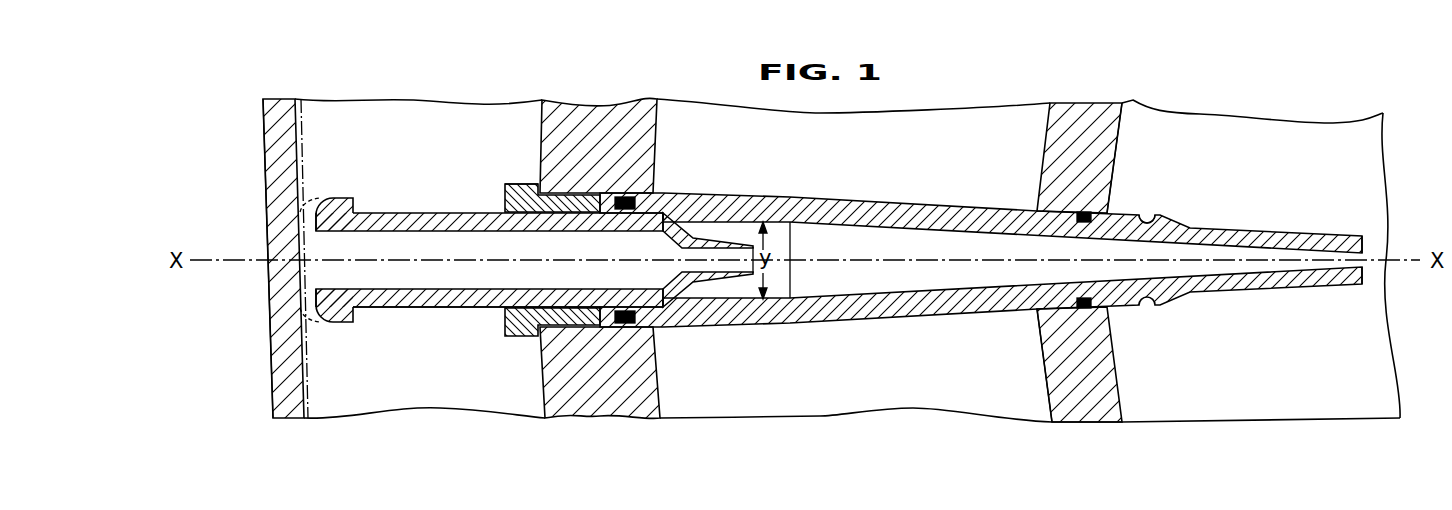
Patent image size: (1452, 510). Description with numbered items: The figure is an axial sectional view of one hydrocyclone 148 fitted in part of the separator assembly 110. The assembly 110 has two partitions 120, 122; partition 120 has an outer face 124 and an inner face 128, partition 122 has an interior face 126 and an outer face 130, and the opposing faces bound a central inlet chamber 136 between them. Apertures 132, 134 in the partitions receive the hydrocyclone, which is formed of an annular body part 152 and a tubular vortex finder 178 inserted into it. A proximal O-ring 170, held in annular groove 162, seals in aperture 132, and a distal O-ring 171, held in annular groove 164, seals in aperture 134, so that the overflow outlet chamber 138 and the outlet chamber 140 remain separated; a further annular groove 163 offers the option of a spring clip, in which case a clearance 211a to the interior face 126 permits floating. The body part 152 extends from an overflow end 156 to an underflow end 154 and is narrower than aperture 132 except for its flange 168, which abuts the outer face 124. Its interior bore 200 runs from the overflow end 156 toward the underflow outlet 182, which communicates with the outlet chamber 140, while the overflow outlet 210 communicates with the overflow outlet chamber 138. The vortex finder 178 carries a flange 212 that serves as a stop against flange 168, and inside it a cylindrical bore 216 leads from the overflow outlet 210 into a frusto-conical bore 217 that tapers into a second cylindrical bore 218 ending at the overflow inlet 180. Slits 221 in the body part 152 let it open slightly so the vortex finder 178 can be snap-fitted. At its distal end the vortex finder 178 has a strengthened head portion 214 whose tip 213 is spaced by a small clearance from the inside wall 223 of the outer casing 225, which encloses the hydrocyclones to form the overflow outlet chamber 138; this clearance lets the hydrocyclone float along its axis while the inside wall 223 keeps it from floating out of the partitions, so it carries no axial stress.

The assembly 110 is at (258, 327).
The partition 120 is at (547, 377).
The partition 122 is at (1110, 407).
The outer face 124 is at (539, 149).
The interior face 126 is at (1115, 153).
The inner face 128 is at (657, 128).
The outer face 130 is at (1042, 146).
The aperture 132 is at (652, 337).
The aperture 134 is at (1107, 338).
The central inlet chamber 136 is at (869, 173).
The overflow outlet chamber 138 is at (415, 137).
The outlet chamber 140 is at (1332, 187).
The hydrocyclone 148 is at (905, 324).
The body part 152 is at (920, 207).
The underflow end 154 is at (1364, 237).
The overflow end 156 is at (505, 193).
The annular groove 162 is at (653, 362).
The annular groove 163 is at (1150, 211).
The annular groove 164 is at (1057, 335).
The flange 168 is at (518, 184).
The proximal O-ring 170 is at (652, 191).
The distal O-ring 171 is at (1077, 216).
The vortex finder 178 is at (398, 302).
The overflow inlet 180 is at (757, 272).
The underflow outlet 182 is at (1364, 265).
The bore 200 is at (917, 290).
The overflow outlet 210 is at (312, 295).
The clearance 211a is at (1119, 324).
The flange 212 is at (507, 330).
The tip 213 is at (315, 223).
The head portion 214 is at (342, 197).
The cylindrical bore 216 is at (507, 286).
The frusto-conical bore 217 is at (670, 255).
The second cylindrical bore 218 is at (742, 250).
The slits 221 is at (307, 272).
The inside wall 223 is at (293, 125).
The outer casing 225 is at (272, 243).